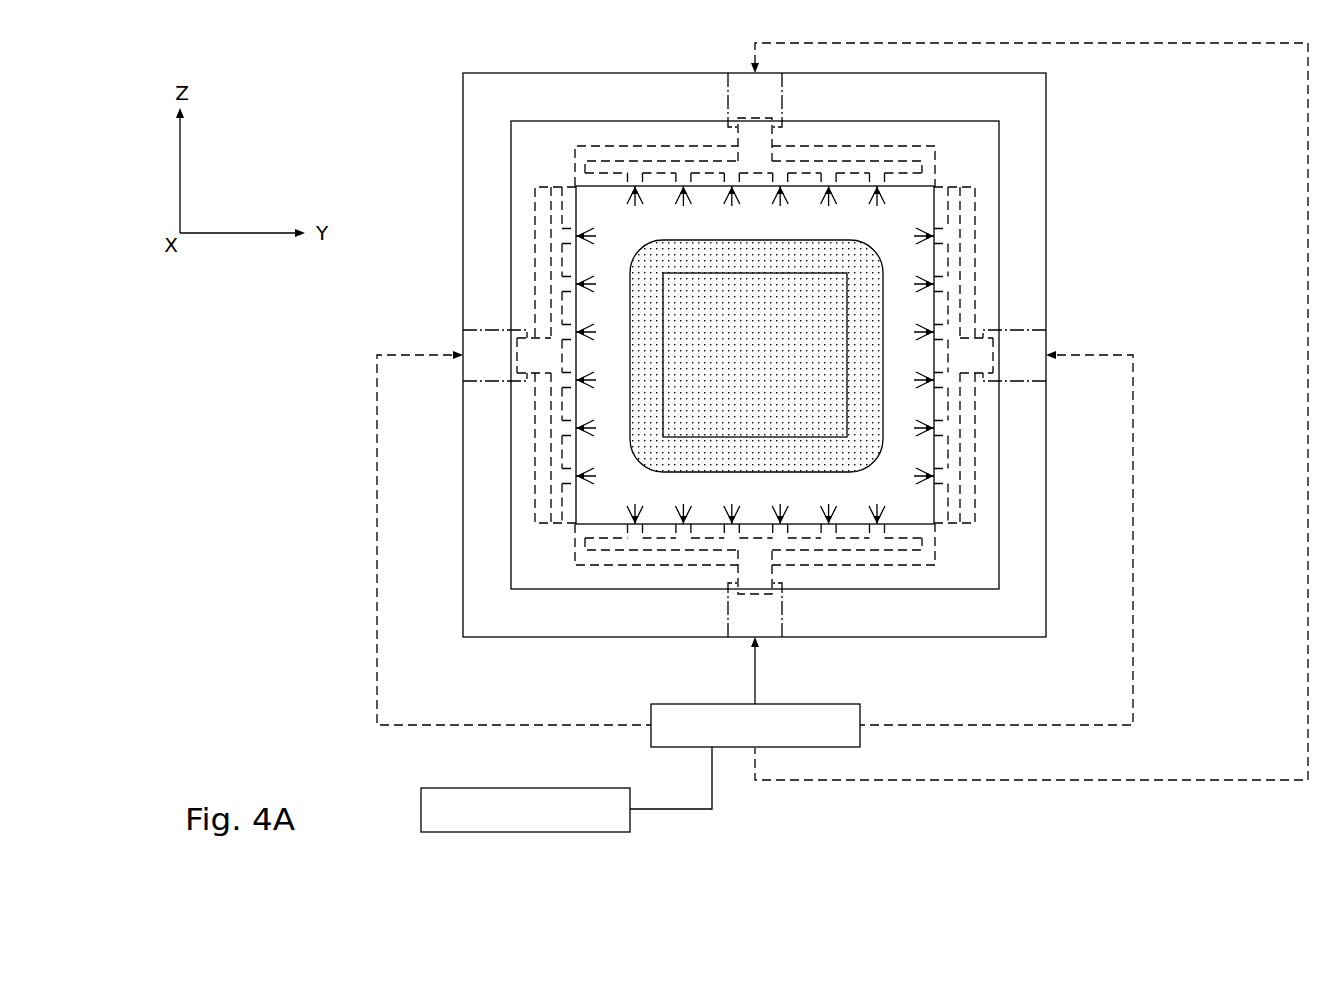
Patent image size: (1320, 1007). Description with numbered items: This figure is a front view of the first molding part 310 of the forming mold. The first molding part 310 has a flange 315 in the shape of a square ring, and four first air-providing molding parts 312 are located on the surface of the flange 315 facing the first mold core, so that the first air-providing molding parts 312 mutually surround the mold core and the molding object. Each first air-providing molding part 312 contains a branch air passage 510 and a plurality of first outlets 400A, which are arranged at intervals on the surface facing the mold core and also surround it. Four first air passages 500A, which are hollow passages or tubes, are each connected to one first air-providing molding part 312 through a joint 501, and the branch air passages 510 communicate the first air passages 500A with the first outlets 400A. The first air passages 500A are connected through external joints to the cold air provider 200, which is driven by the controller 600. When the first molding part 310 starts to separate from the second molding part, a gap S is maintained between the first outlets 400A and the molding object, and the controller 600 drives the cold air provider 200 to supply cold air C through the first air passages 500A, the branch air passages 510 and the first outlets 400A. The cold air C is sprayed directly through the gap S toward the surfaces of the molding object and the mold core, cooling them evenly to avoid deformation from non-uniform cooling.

The first molding part 310 is at (463, 110).
The first air-providing molding part 312 is at (923, 147).
The flange 315 is at (987, 237).
The branch air passage 510 is at (605, 163).
The joint 501 is at (747, 140).
The first air passage 500A is at (748, 85).
The first outlet 400A is at (933, 430).
The cold air provider 200 is at (651, 738).
The controller 600 is at (421, 806).
The gap S is at (705, 186).
The cold air C is at (635, 512).